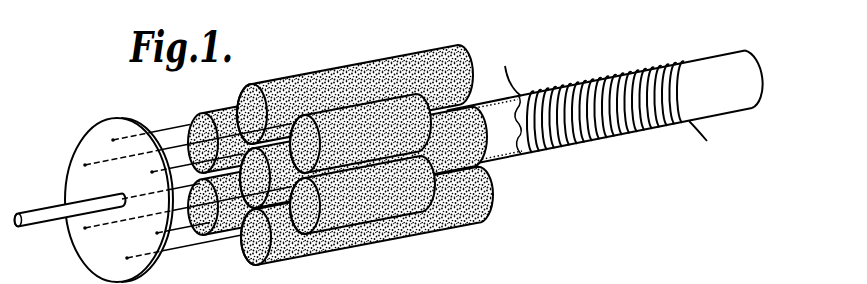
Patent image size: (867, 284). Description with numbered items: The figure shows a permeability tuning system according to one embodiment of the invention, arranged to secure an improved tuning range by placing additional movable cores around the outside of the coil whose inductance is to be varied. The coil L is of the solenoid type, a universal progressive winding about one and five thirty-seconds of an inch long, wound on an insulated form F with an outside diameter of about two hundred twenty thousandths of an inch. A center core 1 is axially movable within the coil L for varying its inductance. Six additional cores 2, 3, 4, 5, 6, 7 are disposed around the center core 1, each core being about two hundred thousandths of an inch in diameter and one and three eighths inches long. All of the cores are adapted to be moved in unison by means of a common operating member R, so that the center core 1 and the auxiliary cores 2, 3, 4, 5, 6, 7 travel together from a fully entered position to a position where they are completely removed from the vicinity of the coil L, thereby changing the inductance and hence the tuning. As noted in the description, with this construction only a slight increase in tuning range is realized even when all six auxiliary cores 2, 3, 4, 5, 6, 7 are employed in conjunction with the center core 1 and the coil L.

The common operating member R is at (52, 226).
The core 1 is at (489, 145).
The additional core 2 is at (282, 90).
The additional core 3 is at (247, 255).
The additional core 4 is at (205, 237).
The additional core 5 is at (363, 118).
The additional core 6 is at (198, 116).
The additional core 7 is at (323, 246).
The insulated form F is at (504, 158).
The coil L is at (612, 78).